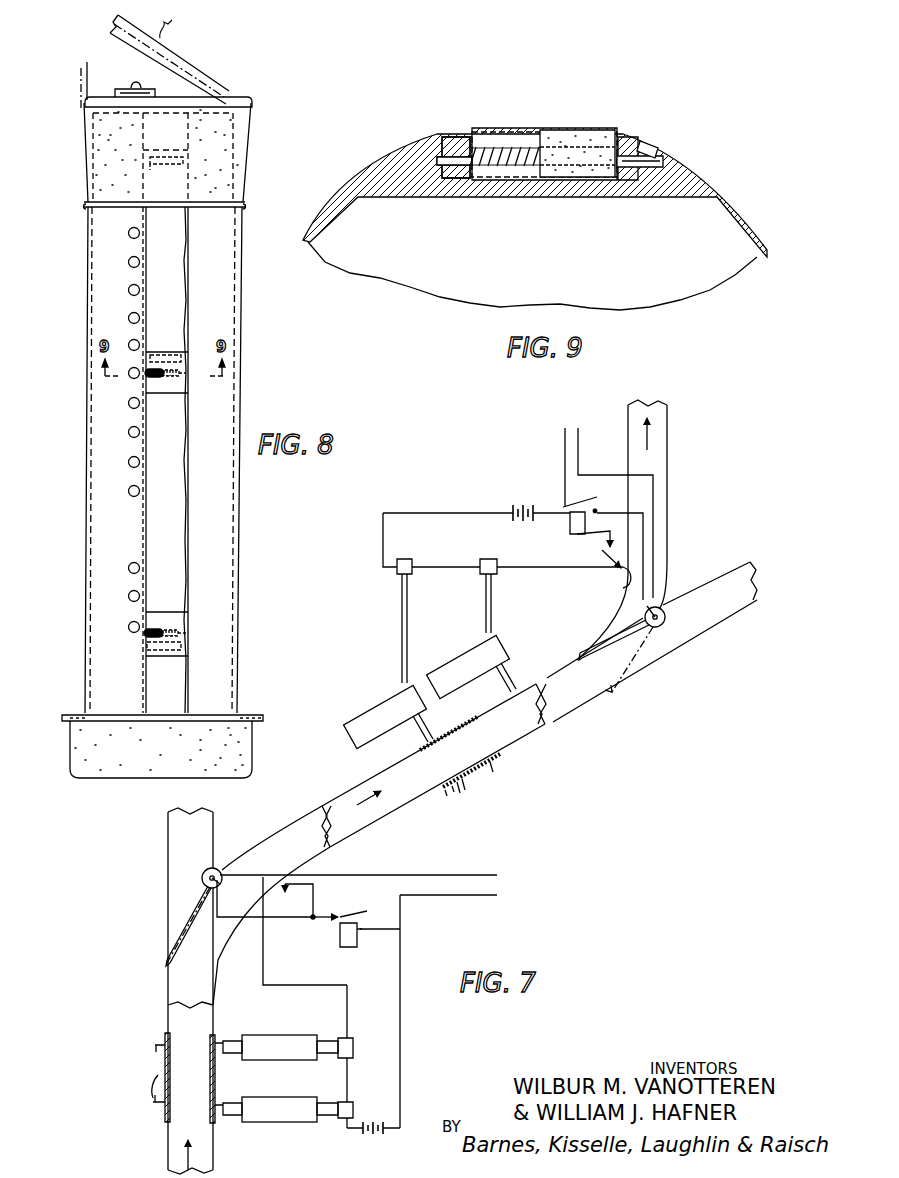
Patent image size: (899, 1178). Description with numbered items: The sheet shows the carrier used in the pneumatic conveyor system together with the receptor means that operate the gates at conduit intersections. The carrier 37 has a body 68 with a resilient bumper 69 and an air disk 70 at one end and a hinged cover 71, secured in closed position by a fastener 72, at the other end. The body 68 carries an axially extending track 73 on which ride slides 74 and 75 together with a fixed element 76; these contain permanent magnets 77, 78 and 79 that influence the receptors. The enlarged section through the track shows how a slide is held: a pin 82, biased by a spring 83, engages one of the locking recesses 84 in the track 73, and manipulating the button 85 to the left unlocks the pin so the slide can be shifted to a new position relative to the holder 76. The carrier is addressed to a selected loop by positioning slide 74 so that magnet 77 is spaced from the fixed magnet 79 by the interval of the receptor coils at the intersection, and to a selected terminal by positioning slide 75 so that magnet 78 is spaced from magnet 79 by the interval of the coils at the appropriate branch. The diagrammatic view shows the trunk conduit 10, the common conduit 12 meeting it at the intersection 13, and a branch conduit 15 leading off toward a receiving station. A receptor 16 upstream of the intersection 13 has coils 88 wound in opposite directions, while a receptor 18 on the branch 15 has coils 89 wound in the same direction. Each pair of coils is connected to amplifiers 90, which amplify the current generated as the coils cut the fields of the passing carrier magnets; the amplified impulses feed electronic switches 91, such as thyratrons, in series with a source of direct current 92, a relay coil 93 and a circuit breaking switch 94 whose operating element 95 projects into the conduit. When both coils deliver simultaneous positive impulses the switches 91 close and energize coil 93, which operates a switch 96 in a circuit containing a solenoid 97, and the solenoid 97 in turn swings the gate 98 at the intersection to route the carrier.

In FIG. 7, the pneumatic trunk conduit 10 is at (333, 797).
In FIG. 7, the common conduit 12 is at (168, 1158).
In FIG. 7, the conduit intersection 13 is at (155, 893).
In FIG. 7, the branch conduit 15 is at (668, 442).
In FIG. 7, the receptor 16 is at (148, 1091).
In FIG. 7, the receptor 18 is at (456, 797).
In FIG. 8, the carrier 37 is at (244, 503).
In FIG. 8, the carrier body 68 is at (241, 388).
In FIG. 9, the carrier body 68 is at (345, 170).
In FIG. 8, the resilient bumper 69 is at (70, 745).
In FIG. 8, the air disk 70 is at (63, 714).
In FIG. 8, the hinged cover 71 is at (182, 60).
In FIG. 8, the fastener 72 is at (127, 89).
In FIG. 8, the track 73 is at (143, 537).
In FIG. 9, the track 73 is at (643, 182).
In FIG. 8, the slide 74 is at (162, 658).
In FIG. 8, the slide 75 is at (159, 395).
In FIG. 8, the fixed element 76 is at (178, 168).
In FIG. 9, the fixed element 76 is at (455, 137).
In FIG. 8, the permanent magnet 77 is at (182, 647).
In FIG. 8, the permanent magnet 78 is at (171, 352).
In FIG. 8, the permanent magnet 79 is at (185, 157).
In FIG. 9, the permanent magnet 79 is at (500, 130).
In FIG. 9, the pin 82 is at (656, 150).
In FIG. 9, the spring 83 is at (498, 170).
In FIG. 9, the locking recess 84 is at (664, 160).
In FIG. 8, the button 85 is at (172, 376).
In FIG. 9, the button 85 is at (575, 130).
In FIG. 7, the receptor coil 88 is at (160, 1046).
In FIG. 7, the receptor coil 89 is at (472, 777).
In FIG. 7, the amplifier 90 is at (413, 672).
In FIG. 7, the electronic switch 91 is at (482, 562).
In FIG. 7, the source of direct current 92 is at (522, 509).
In FIG. 7, the relay coil 93 is at (570, 528).
In FIG. 7, the circuit breaking switch 94 is at (602, 553).
In FIG. 7, the operating element 95 is at (622, 587).
In FIG. 7, the switch 96 is at (590, 497).
In FIG. 7, the solenoid 97 is at (660, 607).
In FIG. 7, the gate 98 is at (610, 676).